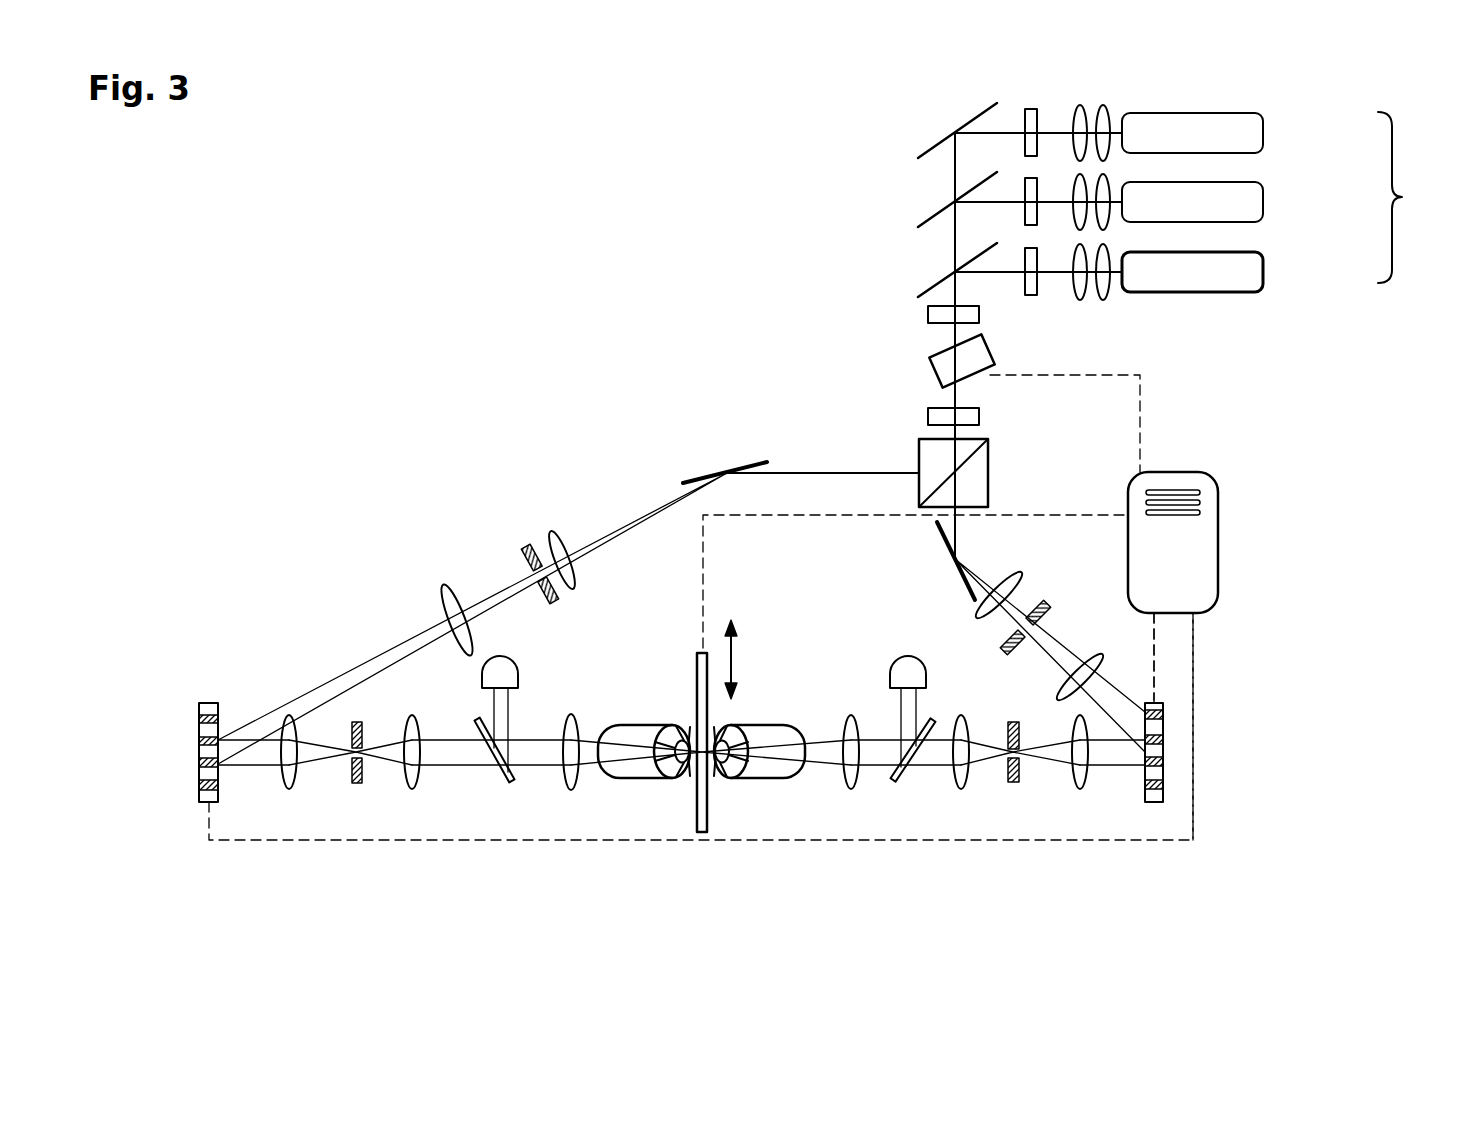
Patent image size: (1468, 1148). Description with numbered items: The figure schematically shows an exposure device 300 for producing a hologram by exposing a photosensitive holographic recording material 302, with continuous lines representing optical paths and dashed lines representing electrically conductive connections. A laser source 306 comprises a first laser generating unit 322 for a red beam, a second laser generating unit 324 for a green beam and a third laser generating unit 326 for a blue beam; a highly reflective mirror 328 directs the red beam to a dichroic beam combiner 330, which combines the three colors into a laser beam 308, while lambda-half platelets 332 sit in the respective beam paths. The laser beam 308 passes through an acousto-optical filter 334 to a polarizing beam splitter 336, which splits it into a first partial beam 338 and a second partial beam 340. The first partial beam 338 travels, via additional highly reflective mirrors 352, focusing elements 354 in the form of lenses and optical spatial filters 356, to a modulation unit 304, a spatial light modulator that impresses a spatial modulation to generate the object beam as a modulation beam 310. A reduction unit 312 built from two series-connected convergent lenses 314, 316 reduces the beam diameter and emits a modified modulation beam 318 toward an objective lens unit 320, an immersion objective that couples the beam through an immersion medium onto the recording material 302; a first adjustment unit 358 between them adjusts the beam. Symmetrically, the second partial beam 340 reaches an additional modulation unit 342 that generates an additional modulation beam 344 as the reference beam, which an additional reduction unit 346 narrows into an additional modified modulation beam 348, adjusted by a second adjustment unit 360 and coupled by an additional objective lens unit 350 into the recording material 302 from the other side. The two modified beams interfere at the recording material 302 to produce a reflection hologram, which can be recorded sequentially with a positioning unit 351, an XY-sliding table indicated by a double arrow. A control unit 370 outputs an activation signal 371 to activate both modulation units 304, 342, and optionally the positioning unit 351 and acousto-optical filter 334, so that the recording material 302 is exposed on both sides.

The exposure device 300 is at (603, 345).
The holographic recording material 302 is at (695, 810).
The modulation unit 304 is at (200, 797).
The laser source 306 is at (1412, 197).
The laser beam 308 is at (936, 346).
The modulation beam 310 is at (260, 767).
The reduction unit 312 is at (427, 878).
The convergent lens 314 is at (299, 787).
The convergent lens 316 is at (399, 788).
The modified modulation beam 318 is at (472, 767).
The objective lens unit 320 is at (640, 767).
The first laser generating unit 322 is at (1263, 133).
The second laser generating unit 324 is at (1263, 202).
The third laser generating unit 326 is at (1263, 272).
The highly reflective mirror 328 is at (921, 152).
The dichroic beam combiner 330 is at (921, 222).
The lambda/2 platelet 332 is at (1040, 160).
The acousto-optical filter 334 is at (933, 372).
The beam splitter 336 is at (919, 452).
The first partial beam 338 is at (793, 472).
The second partial beam 340 is at (958, 533).
The additional modulation unit 342 is at (1165, 792).
The additional modulation beam 344 is at (1120, 764).
The additional reduction unit 346 is at (1095, 793).
The additional modified modulation beam 348 is at (905, 767).
The additional objective lens unit 350 is at (767, 767).
The positioning unit 351 is at (735, 652).
The highly reflective mirror 352 is at (686, 481).
The focusing element 354 is at (572, 790).
The optical spatial filter 356 is at (524, 556).
The first adjustment unit 358 is at (514, 672).
The second adjustment unit 360 is at (890, 670).
The control unit 370 is at (1218, 527).
The activation signal 371 is at (1154, 682).